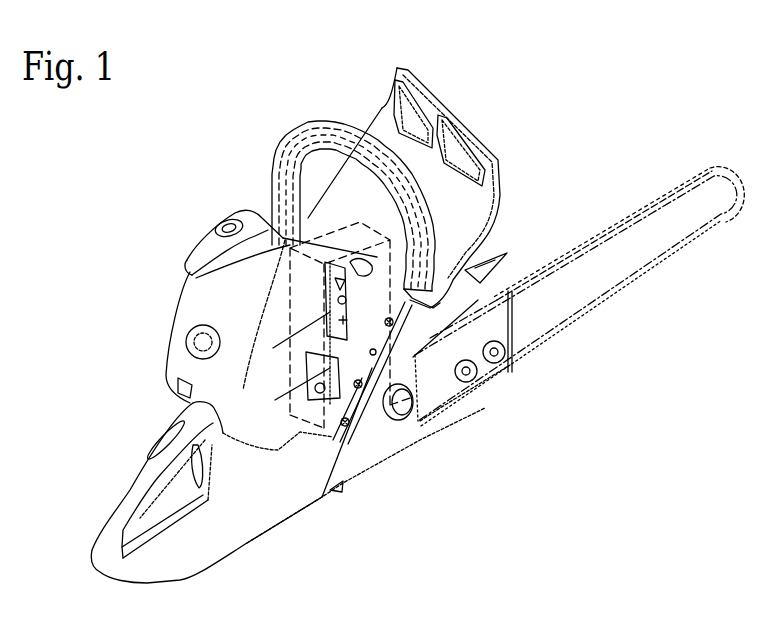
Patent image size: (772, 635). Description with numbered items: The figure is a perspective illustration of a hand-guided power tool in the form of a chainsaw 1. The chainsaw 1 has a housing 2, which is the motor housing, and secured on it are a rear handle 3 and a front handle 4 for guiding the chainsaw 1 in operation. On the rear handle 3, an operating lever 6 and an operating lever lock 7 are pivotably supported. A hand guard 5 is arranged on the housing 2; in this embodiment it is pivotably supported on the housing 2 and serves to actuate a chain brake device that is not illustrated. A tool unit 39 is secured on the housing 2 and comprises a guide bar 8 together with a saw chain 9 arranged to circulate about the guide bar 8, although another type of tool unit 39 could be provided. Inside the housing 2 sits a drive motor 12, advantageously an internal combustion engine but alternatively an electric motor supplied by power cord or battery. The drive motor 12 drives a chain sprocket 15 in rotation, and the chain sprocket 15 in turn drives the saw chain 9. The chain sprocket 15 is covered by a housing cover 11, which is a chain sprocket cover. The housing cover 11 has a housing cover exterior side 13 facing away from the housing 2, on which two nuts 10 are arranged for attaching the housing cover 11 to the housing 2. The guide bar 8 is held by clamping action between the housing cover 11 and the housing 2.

The chainsaw 1 is at (567, 95).
The housing 2 is at (297, 493).
The rear handle 3 is at (127, 480).
The front handle 4 is at (298, 140).
The hand guard 5 is at (440, 108).
The operating lever 6 is at (199, 462).
The operating lever lock 7 is at (157, 447).
The guide bar 8 is at (625, 240).
The saw chain 9 is at (559, 262).
The nuts 10 is at (500, 360).
The housing cover 11 is at (388, 452).
The drive motor 12 is at (292, 237).
The housing cover exterior side 13 is at (440, 425).
The chain sprocket 15 is at (407, 415).
The tool unit 39 is at (553, 344).